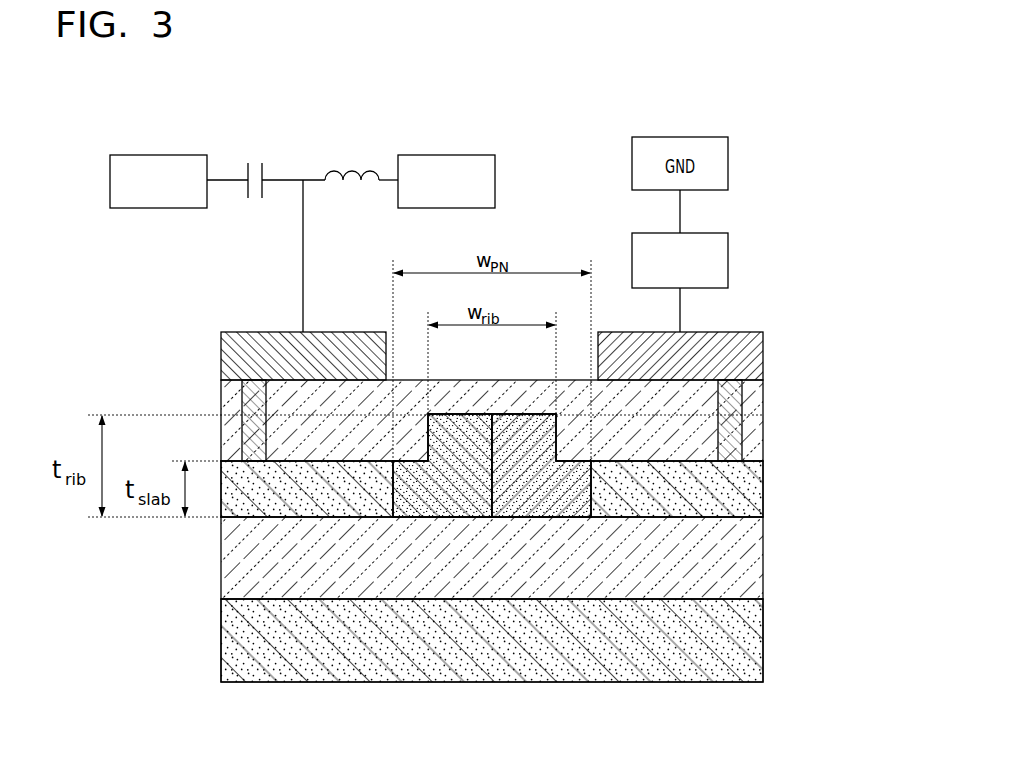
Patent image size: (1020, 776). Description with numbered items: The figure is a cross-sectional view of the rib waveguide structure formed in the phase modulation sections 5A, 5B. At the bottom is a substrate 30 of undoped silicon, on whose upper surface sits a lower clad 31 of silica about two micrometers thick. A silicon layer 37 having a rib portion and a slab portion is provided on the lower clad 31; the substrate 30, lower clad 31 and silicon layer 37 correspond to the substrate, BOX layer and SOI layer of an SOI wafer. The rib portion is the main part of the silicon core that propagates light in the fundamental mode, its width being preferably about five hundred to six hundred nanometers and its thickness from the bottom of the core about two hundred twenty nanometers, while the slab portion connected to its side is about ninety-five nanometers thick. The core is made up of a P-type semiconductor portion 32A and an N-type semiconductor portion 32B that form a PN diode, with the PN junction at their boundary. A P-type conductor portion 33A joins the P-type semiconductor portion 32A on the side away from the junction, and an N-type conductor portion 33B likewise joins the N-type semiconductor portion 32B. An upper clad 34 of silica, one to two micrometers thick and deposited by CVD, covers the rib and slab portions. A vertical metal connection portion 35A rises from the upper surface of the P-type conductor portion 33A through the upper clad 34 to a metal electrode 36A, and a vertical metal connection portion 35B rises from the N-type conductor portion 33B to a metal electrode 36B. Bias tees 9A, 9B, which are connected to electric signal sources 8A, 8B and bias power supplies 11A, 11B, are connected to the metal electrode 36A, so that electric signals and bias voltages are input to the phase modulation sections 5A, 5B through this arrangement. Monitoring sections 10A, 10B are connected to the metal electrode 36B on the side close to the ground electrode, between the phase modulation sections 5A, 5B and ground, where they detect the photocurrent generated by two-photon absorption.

The phase modulation section 5A is at (500, 496).
The phase modulation section 5B is at (500, 496).
The electric signal source 8A is at (176, 167).
The electric signal source 8B is at (158, 159).
The bias tee 9A is at (302, 209).
The bias tee 9B is at (306, 150).
The monitoring section 10A is at (722, 246).
The monitoring section 10B is at (703, 236).
The bias power supply 11A is at (476, 167).
The bias power supply 11B is at (444, 158).
The substrate 30 is at (763, 636).
The lower clad 31 is at (763, 554).
The P-type semiconductor portion 32A is at (438, 495).
The N-type semiconductor portion 32B is at (552, 495).
The P-type conductor portion 33A is at (302, 495).
The N-type conductor portion 33B is at (685, 495).
The upper clad 34 is at (763, 404).
The vertical metal connection portion 35A is at (250, 402).
The vertical metal connection portion 35B is at (735, 425).
The metal electrode 36A is at (220, 346).
The metal electrode 36B is at (763, 353).
The silicon layer 37 is at (763, 486).